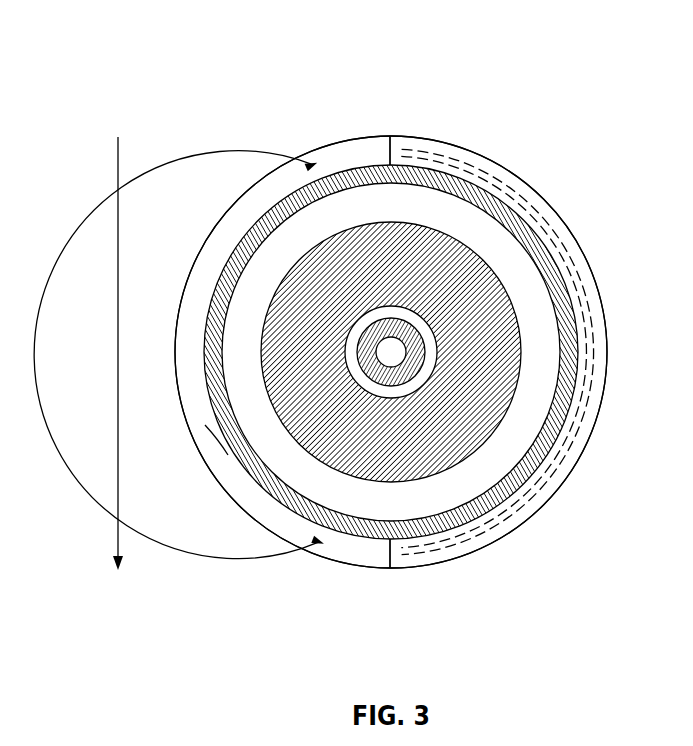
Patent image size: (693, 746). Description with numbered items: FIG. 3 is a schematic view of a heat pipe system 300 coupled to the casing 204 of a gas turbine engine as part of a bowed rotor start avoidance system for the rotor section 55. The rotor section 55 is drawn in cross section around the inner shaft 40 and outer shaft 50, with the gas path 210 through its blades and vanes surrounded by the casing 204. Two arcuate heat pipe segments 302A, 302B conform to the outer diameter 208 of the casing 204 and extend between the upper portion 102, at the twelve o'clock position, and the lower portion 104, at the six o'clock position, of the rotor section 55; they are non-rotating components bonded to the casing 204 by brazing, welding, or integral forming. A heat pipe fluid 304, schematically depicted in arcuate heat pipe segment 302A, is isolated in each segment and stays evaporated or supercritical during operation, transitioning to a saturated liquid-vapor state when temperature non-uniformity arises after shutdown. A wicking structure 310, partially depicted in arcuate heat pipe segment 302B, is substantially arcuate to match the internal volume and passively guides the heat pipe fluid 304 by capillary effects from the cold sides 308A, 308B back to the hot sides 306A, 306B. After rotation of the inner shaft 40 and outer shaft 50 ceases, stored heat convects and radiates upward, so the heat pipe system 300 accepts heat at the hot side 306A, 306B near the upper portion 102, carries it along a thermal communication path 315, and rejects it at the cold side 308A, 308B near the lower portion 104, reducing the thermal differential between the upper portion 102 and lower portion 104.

The rotor section 55 is at (200, 52).
The upper portion 102 is at (392, 78).
The lower portion 104 is at (392, 610).
The heat pipe system 300 is at (590, 198).
The arcuate heat pipe segment 302A is at (280, 168).
The arcuate heat pipe segment 302B is at (503, 170).
The heat pipe fluid 304 is at (232, 222).
The hot side 306A is at (378, 152).
The hot side 306B is at (397, 152).
The cold side 308A is at (342, 548).
The cold side 308B is at (400, 562).
The wicking structure 310 is at (448, 155).
The thermal communication path 315 is at (115, 218).
The casing 204 is at (558, 416).
The outer diameter 208 is at (228, 455).
The gas path 210 is at (523, 425).
The outer shaft 50 is at (465, 402).
The inner shaft 40 is at (400, 373).